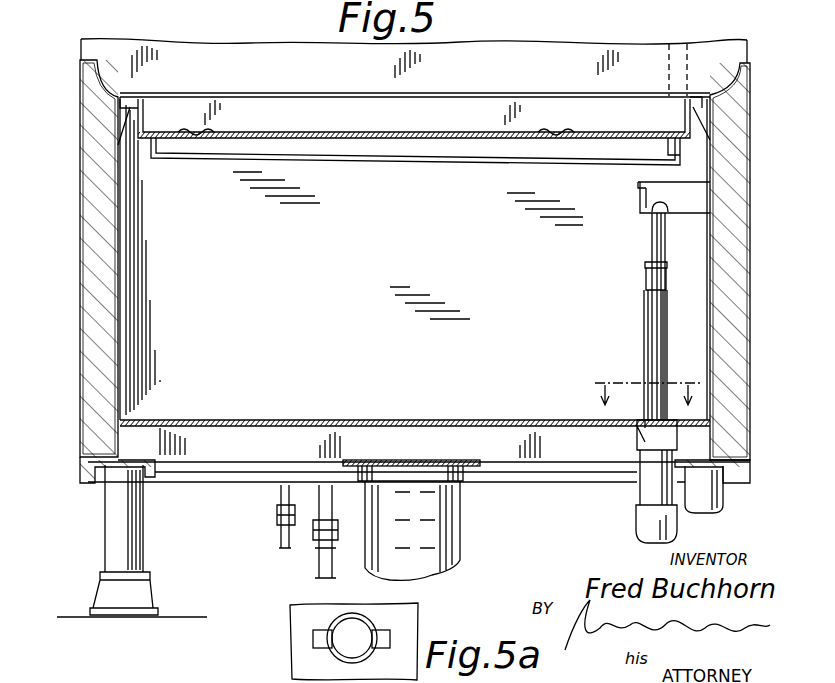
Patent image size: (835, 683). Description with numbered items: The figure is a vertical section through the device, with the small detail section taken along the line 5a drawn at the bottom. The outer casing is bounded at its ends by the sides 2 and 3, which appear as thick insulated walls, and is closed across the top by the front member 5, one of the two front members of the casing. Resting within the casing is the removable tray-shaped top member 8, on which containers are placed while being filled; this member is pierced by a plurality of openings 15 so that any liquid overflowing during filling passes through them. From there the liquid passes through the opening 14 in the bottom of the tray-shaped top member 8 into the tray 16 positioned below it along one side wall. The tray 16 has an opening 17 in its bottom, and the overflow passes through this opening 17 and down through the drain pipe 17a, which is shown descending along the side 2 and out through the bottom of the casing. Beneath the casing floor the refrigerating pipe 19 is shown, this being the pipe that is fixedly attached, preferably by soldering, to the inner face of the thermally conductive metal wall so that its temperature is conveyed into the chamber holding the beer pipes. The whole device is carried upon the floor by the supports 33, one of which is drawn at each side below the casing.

The side 2 is at (762, 233).
The side 3 is at (81, 260).
The front member 5 is at (573, 58).
The section line 5a— 5a is at (649, 380).
The tray-shaped top member 8 is at (308, 112).
The opening 14 is at (660, 158).
The openings 15 is at (203, 132).
The tray 16 is at (653, 192).
The opening 17 is at (660, 203).
The drain pipe 17a is at (655, 242).
The refrigerating pipe 19 is at (326, 485).
The supports 33 is at (128, 527).